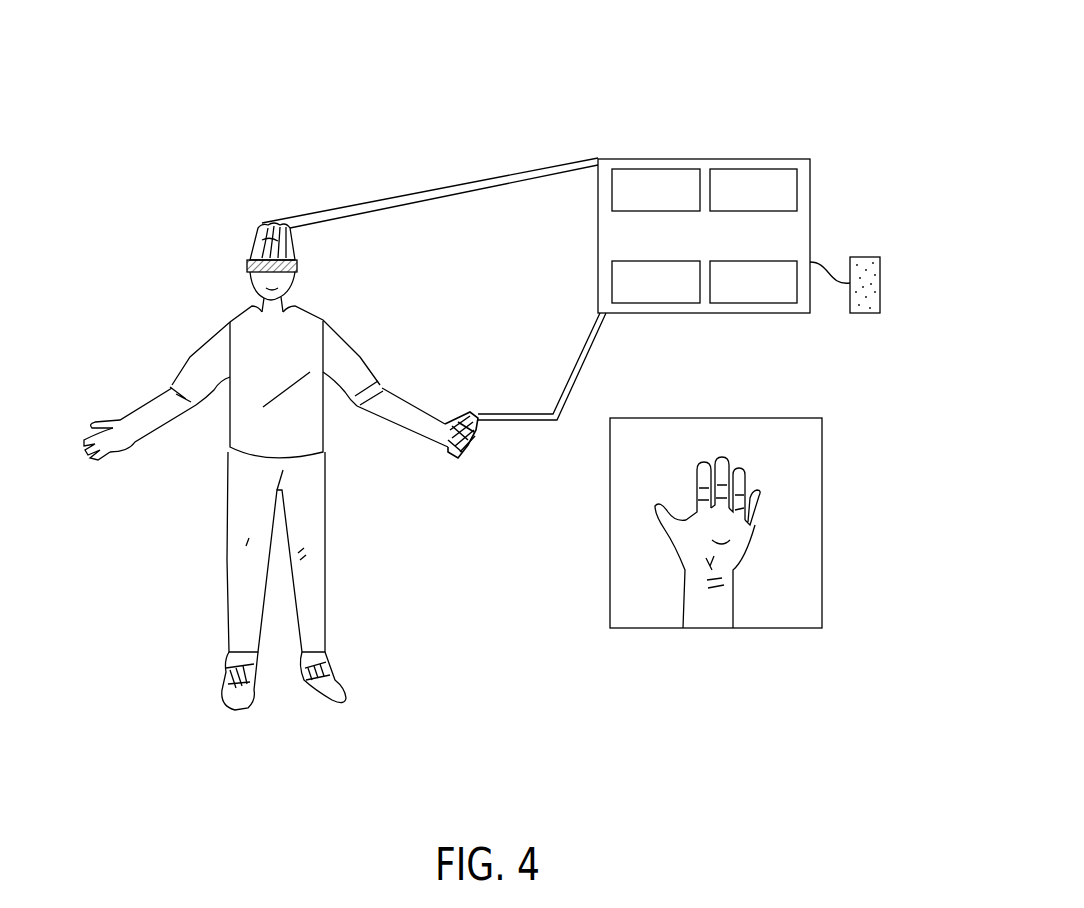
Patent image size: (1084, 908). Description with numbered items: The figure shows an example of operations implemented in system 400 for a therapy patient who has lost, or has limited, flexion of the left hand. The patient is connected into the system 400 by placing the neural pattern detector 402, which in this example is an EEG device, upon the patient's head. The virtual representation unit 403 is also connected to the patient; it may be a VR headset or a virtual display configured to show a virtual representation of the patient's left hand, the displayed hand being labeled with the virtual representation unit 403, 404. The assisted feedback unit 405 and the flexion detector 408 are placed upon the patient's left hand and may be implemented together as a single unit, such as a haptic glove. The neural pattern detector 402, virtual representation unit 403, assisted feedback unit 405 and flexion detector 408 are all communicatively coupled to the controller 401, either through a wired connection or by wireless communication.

The system 400 is at (420, 97).
The controller 401 is at (753, 158).
The neural pattern detector 402 is at (258, 233).
The virtual representation unit 403 is at (250, 265).
The VR display 404 is at (822, 455).
The assisted feedback unit 405 is at (460, 493).
The flexion detector 408 is at (448, 454).